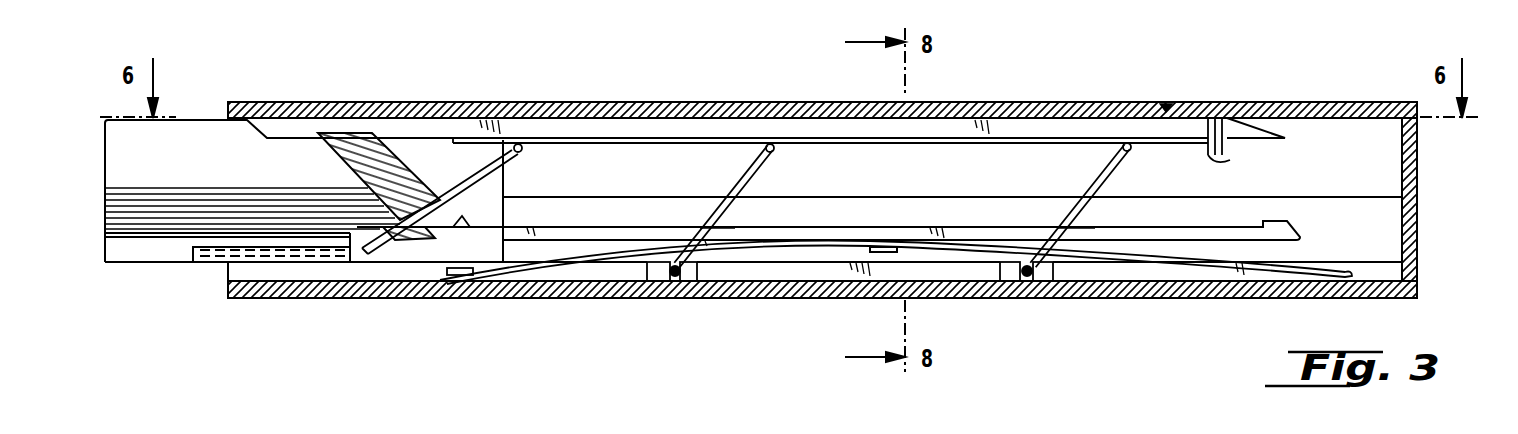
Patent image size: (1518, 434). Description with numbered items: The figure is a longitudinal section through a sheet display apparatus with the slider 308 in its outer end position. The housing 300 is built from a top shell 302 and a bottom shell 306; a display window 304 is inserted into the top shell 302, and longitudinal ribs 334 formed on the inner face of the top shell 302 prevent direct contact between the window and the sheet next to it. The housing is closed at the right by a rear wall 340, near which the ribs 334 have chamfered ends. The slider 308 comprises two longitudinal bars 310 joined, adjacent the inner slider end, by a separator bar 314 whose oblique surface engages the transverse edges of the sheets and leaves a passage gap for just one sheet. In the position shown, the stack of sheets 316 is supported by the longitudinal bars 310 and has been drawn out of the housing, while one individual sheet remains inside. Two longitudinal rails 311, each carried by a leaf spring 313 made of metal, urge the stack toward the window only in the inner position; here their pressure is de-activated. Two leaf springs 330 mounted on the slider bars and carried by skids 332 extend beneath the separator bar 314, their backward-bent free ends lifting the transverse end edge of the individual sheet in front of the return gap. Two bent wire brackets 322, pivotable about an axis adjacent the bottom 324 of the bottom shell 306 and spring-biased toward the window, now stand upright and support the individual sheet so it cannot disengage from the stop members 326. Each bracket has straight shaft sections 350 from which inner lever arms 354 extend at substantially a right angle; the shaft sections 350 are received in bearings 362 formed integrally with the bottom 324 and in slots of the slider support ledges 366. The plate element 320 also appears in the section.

The housing 300 is at (854, 186).
The top shell 302 is at (1287, 108).
The display window 304 is at (648, 101).
The bottom shell 306 is at (1168, 291).
The slider 308 is at (161, 275).
The longitudinal bars 310 is at (279, 188).
The longitudinal rails 311 is at (603, 231).
The leaf spring 313 is at (737, 247).
The separator bar 314 is at (408, 170).
The stack of sheets 316 is at (183, 205).
The plate 320 is at (862, 142).
The bent wire member 322 is at (735, 171).
The bottom 324 is at (987, 298).
The stop members 326 is at (1220, 157).
The leaf springs 330 is at (506, 177).
The skids 332 is at (291, 255).
The longitudinal ribs 334 is at (788, 136).
The rear wall 340 is at (1418, 180).
The shaft sections 350 is at (668, 276).
The inner lever arm 354 is at (724, 209).
The bearings 362 is at (652, 278).
The slider support ledges 366 is at (813, 268).